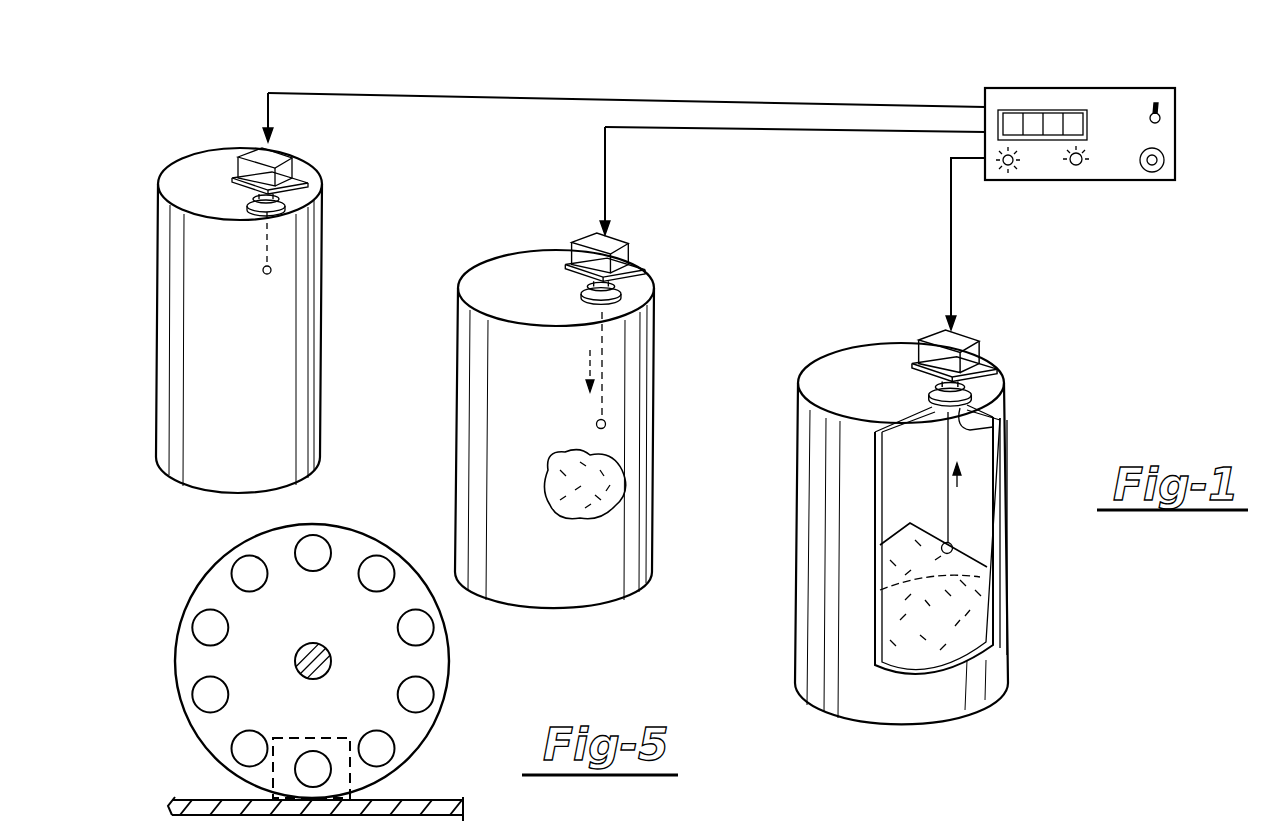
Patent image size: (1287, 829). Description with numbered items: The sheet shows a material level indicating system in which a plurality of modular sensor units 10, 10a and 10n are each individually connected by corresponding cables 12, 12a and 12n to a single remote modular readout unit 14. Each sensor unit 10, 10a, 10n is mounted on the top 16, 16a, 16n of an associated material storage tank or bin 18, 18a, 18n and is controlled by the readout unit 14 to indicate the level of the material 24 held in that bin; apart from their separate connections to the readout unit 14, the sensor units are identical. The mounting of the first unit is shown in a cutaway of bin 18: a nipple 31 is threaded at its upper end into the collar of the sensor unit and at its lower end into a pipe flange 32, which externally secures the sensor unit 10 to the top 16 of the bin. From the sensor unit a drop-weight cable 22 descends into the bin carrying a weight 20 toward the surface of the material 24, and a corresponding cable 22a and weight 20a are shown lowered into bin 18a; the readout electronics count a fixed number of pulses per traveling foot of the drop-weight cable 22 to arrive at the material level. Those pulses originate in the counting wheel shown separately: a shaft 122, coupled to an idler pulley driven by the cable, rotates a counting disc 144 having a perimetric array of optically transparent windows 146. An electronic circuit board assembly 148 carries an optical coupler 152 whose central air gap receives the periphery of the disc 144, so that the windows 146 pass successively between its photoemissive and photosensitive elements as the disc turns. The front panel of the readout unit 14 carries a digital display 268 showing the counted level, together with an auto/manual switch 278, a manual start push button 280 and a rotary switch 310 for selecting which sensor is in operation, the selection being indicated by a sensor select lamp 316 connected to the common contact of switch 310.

In FIG. 1, the sensor unit 10 is at (975, 348).
In FIG. 1, the sensor unit 10a is at (622, 258).
In FIG. 1, the sensor unit 10n is at (288, 168).
In FIG. 1, the cable 12 is at (953, 278).
In FIG. 1, the cable 12a is at (605, 175).
In FIG. 1, the cable 12n is at (343, 97).
In FIG. 1, the readout unit 14 is at (1177, 138).
In FIG. 1, the top of storage bin 16 is at (997, 387).
In FIG. 1, the top of storage bin 16a is at (640, 288).
In FIG. 1, the top of storage bin 16n is at (305, 191).
In FIG. 1, the material storage tank or bin 18 is at (998, 545).
In FIG. 1, the material storage tank or bin 18a is at (632, 435).
In FIG. 1, the material storage tank or bin 18n is at (297, 322).
In FIG. 1, the sensing weight 20 is at (933, 557).
In FIG. 1, the sensing weight 20a is at (593, 425).
In FIG. 1, the drop-weight cable 22 is at (947, 475).
In FIG. 1, the cord 22a is at (603, 375).
In FIG. 1, the material 24 is at (563, 518).
In FIG. 1, the nipple 31 is at (928, 398).
In FIG. 1, the pipe flange 32 is at (967, 427).
In FIG. 5, the shaft 122 is at (322, 646).
In FIG. 5, the counting disc 144 is at (340, 525).
In FIG. 5, the optically transparent apertures or windows 146 is at (252, 740).
In FIG. 5, the electronic circuit board assembly 148 is at (420, 790).
In FIG. 5, the optical coupler 152 is at (411, 801).
In FIG. 1, the digital display 268 is at (1015, 110).
In FIG. 1, the auto/manual switch 278 is at (1160, 115).
In FIG. 1, the manual start push button 280 is at (1164, 165).
In FIG. 1, the rotary switch 310 is at (1075, 168).
In FIG. 1, the sensor select lamp 316 is at (1007, 168).